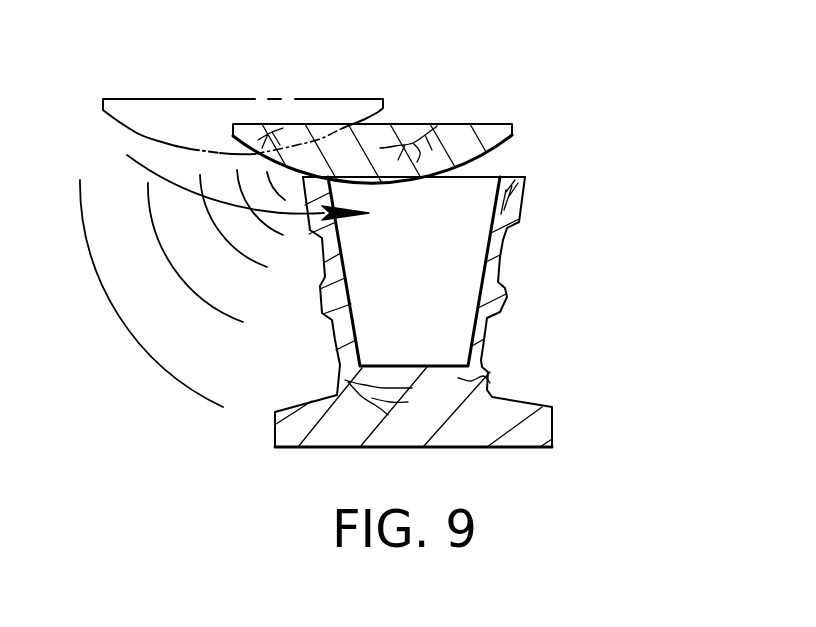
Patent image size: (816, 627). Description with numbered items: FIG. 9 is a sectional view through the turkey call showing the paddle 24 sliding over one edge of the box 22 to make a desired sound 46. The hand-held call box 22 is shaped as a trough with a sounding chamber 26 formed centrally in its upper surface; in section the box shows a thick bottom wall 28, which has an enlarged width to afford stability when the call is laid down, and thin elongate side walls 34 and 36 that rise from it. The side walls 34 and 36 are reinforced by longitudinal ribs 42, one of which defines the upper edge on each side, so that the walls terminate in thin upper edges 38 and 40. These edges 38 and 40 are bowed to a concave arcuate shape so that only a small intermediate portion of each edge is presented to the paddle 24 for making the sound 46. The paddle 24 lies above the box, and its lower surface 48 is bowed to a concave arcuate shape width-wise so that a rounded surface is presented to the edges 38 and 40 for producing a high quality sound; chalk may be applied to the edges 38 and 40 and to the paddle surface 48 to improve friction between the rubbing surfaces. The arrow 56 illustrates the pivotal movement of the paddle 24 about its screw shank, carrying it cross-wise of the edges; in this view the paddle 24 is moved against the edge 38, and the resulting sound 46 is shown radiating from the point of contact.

The box 22 is at (553, 424).
The paddle 24 is at (450, 123).
The sounding chamber 26 is at (502, 257).
The bottom wall 28 is at (492, 378).
The side wall 34 is at (335, 338).
The side wall 36 is at (520, 213).
The upper edge 38 is at (305, 190).
The upper edge 40 is at (517, 177).
The longitudinal rib 42 is at (523, 188).
The sound 46 is at (113, 313).
The lower surface of the paddle 48 is at (505, 149).
The pivotal movement of the paddle 56 is at (175, 183).